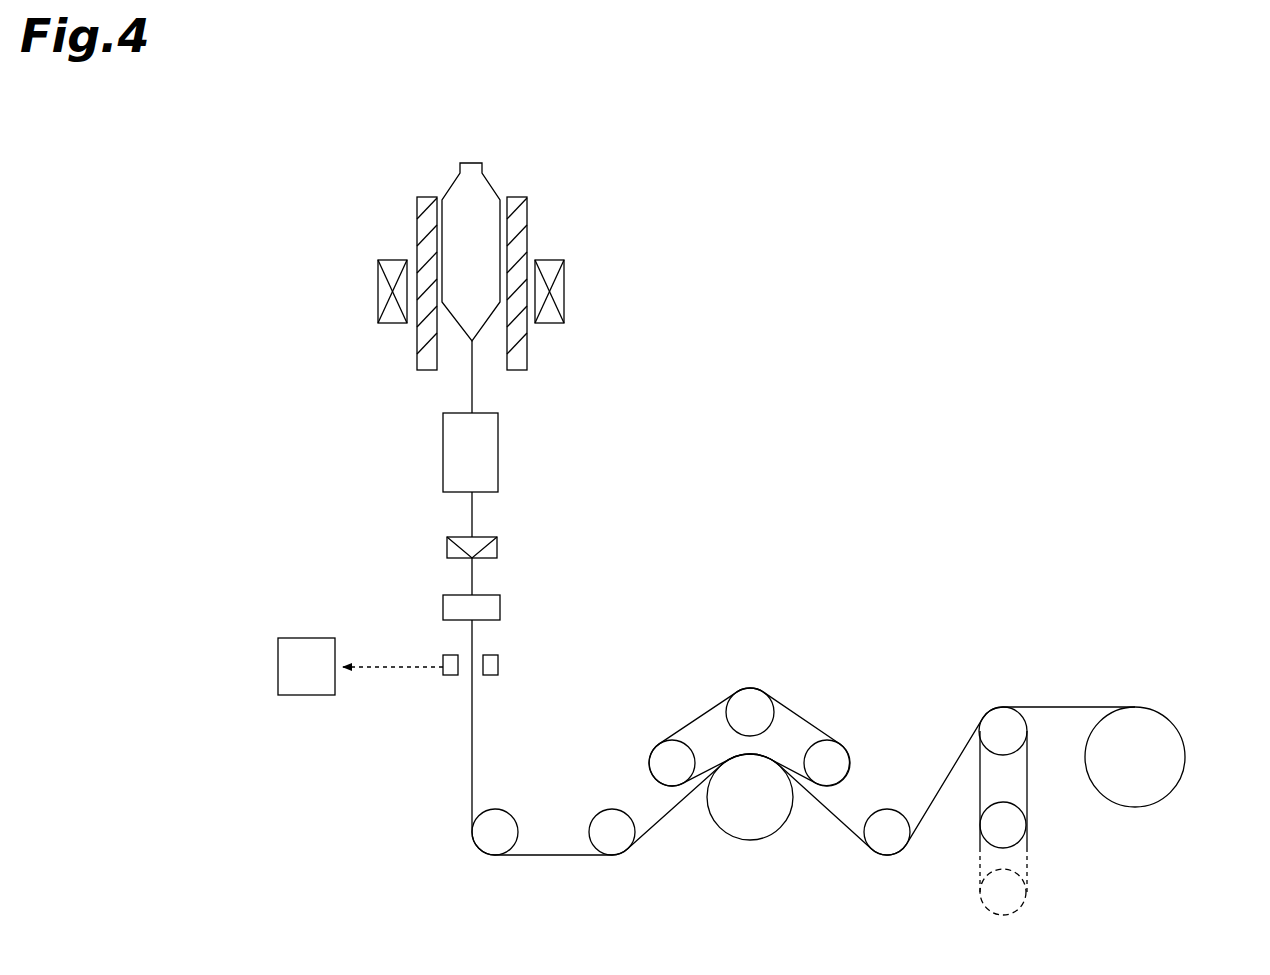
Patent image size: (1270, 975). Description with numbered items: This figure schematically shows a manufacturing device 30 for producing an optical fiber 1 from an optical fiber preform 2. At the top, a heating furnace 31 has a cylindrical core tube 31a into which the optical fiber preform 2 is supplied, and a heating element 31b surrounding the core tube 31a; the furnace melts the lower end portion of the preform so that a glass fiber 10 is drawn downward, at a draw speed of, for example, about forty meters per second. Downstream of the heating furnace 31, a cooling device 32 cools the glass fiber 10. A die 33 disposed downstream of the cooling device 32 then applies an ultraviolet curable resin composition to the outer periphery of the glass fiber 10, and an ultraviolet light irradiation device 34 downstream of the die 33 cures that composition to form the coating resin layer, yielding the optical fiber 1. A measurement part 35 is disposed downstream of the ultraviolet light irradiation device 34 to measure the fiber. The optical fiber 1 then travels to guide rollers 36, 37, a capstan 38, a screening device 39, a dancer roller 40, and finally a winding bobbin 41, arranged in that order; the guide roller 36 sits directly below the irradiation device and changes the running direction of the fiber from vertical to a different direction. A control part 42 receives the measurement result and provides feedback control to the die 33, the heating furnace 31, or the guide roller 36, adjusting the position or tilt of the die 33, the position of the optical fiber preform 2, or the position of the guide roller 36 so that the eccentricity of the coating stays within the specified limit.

The optical fiber 1 is at (471, 722).
The optical fiber preform 2 is at (484, 200).
The glass fiber 10 is at (470, 393).
The manufacturing device 30 is at (851, 295).
The heating furnace 31 is at (549, 221).
The core tube 31a is at (528, 348).
The heating element 31b is at (567, 290).
The cooling device 32 is at (500, 450).
The die 33 is at (498, 545).
The ultraviolet light irradiation device 34 is at (500, 605).
The measurement part 35 is at (499, 662).
The guide roller 36 is at (472, 842).
The guide roller 37 is at (594, 811).
The capstan 38 is at (791, 695).
The screening device 39 is at (886, 809).
The dancer roller 40 is at (1014, 699).
The winding bobbin 41 is at (1186, 756).
The control part 42 is at (303, 638).